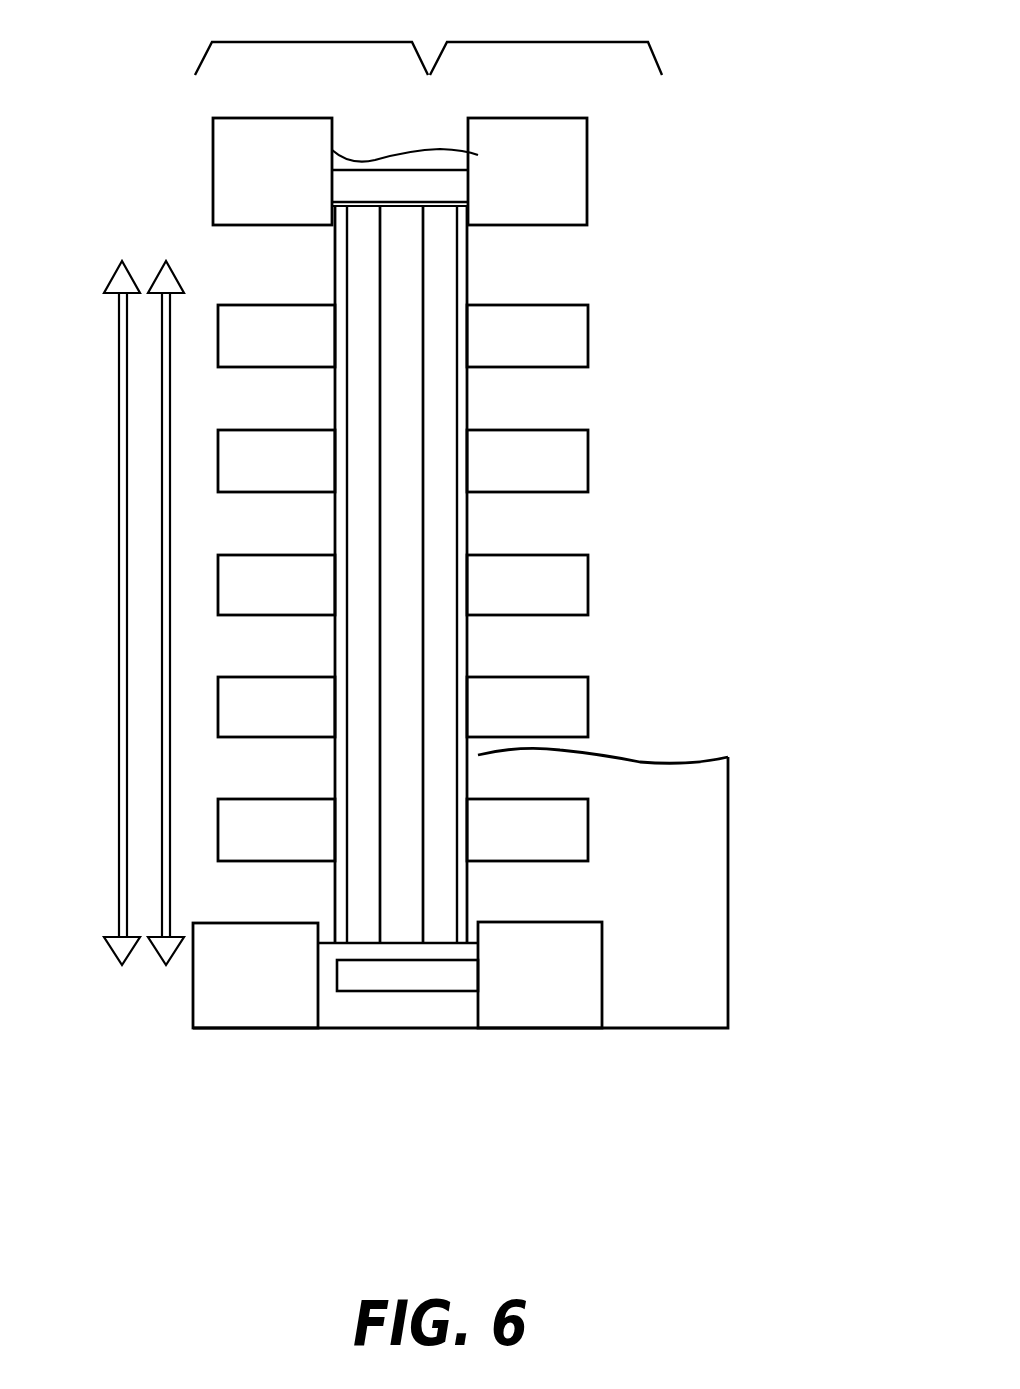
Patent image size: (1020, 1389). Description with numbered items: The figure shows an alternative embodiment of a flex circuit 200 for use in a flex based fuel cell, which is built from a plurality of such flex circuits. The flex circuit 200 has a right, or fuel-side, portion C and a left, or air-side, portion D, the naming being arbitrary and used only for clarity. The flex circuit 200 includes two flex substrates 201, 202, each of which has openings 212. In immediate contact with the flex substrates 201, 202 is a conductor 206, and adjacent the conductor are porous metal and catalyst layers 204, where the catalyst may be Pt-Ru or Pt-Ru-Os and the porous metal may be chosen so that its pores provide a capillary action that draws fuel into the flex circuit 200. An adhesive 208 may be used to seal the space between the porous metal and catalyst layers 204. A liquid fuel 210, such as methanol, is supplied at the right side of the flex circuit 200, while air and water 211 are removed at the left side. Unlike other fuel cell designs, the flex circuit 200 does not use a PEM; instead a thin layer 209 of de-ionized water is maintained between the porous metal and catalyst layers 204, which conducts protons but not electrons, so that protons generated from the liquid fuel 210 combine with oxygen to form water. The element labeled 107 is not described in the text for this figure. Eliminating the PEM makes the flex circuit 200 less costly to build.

The flex circuit 200 is at (458, 547).
The flex substrate 201 is at (333, 114).
The flex substrate 202 is at (565, 203).
The porous metal and catalyst layers 204 is at (357, 593).
The conductor 206 is at (467, 647).
The adhesive 208 is at (432, 180).
The thin layer of de-ionized water 209 is at (400, 747).
The liquid fuel 210 is at (700, 834).
The air and water 211 is at (112, 524).
The openings 212 is at (585, 394).
The inner wall 107 is at (335, 287).